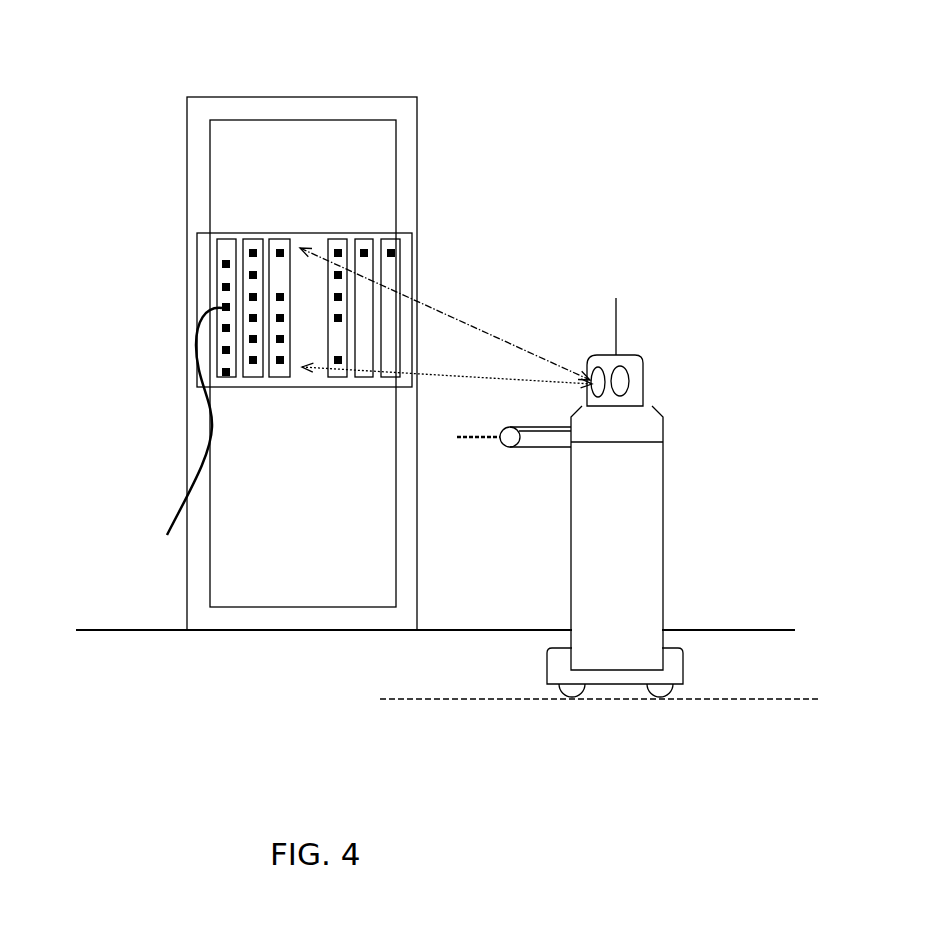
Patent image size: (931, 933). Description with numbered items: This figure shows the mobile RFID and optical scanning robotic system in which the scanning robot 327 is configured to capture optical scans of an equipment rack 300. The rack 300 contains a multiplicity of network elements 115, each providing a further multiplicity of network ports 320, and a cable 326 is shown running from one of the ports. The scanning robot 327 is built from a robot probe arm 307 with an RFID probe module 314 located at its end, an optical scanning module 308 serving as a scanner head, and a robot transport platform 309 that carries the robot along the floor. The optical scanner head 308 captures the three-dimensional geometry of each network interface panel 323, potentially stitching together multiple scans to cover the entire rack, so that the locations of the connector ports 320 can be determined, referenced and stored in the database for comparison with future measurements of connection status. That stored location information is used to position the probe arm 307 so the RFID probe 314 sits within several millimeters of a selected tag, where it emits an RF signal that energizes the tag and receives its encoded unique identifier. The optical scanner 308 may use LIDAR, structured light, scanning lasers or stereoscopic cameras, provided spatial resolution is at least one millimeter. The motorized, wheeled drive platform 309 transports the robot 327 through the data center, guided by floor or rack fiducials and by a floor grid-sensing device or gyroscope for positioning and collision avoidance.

The equipment rack 300 is at (327, 108).
The network elements 115 is at (223, 250).
The network ports 320 is at (220, 265).
The network interface panel 323 is at (307, 252).
The cable 326 is at (212, 427).
The scanning robot 327 is at (616, 425).
The optical scanning module 308 is at (638, 375).
The robot probe arm 307 is at (552, 438).
The RFID probe module 314 is at (478, 432).
The robot transport platform 309 is at (670, 667).